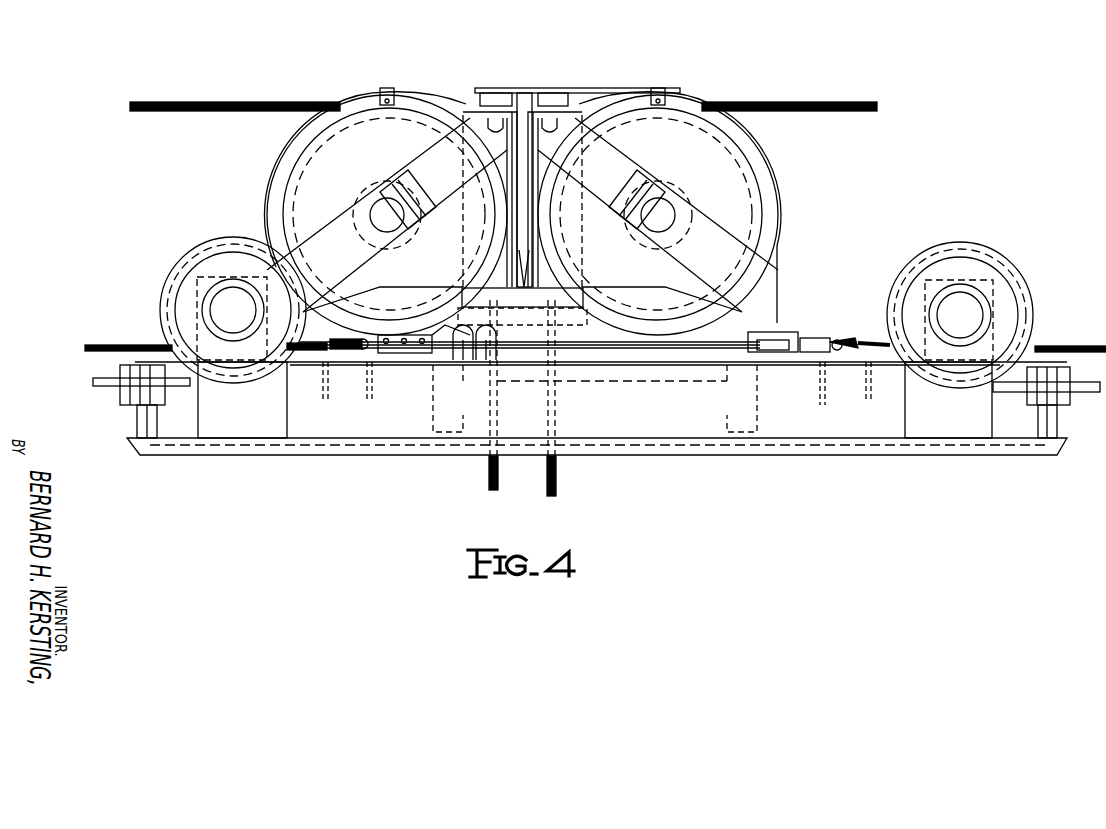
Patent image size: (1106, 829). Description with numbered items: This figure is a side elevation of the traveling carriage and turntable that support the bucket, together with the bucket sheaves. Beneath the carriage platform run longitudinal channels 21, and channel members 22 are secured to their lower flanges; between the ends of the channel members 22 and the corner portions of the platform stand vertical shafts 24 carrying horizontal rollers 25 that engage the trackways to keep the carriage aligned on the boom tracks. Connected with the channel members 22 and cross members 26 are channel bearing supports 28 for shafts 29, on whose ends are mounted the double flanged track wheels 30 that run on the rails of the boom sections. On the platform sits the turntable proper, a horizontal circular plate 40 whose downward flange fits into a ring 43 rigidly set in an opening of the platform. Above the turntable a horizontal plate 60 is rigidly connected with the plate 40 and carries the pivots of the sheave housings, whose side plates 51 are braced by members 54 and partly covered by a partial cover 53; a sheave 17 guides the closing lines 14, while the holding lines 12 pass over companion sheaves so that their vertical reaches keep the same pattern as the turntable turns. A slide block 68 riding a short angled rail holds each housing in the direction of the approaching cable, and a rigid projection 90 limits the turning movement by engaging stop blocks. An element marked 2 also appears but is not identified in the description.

The rail 2 is at (138, 343).
The holding lines 12 is at (827, 112).
The closing lines 14 is at (174, 112).
The sheave 17 is at (293, 162).
The channels 21 is at (835, 440).
The channel members 22 is at (770, 455).
The vertical shafts 24 is at (137, 420).
The horizontal rollers 25 is at (93, 381).
The cross members 26 is at (208, 413).
The channel bearing supports 28 is at (197, 282).
The shafts 29 is at (233, 296).
The double flanged track wheels 30 is at (940, 244).
The horizontal circular plate 40 is at (706, 350).
The ring 43 is at (663, 352).
The side plate 51 is at (509, 198).
The partial cover 53 is at (398, 90).
The bracing member 54 is at (440, 150).
The horizontal plate 60 is at (606, 88).
The slide block 68 is at (782, 342).
The rigid projection 90 is at (486, 362).